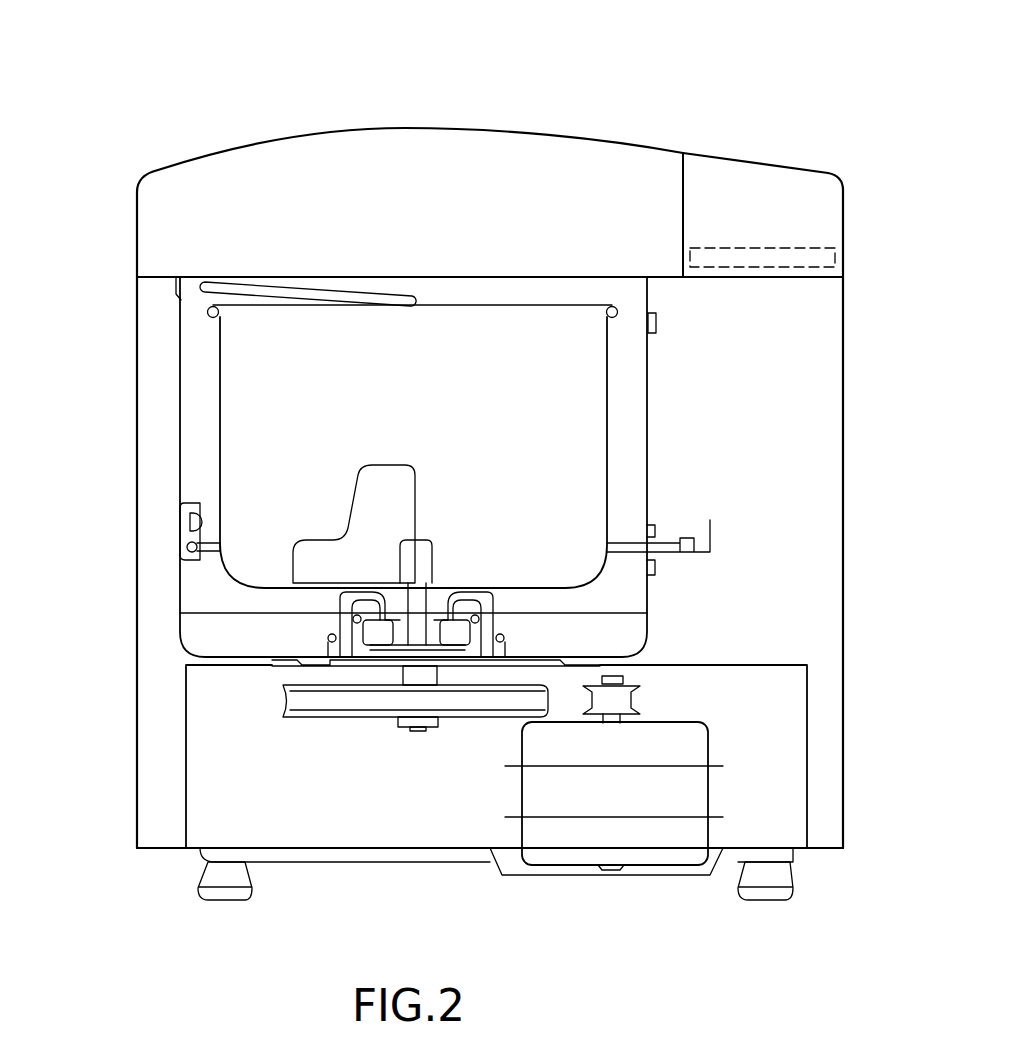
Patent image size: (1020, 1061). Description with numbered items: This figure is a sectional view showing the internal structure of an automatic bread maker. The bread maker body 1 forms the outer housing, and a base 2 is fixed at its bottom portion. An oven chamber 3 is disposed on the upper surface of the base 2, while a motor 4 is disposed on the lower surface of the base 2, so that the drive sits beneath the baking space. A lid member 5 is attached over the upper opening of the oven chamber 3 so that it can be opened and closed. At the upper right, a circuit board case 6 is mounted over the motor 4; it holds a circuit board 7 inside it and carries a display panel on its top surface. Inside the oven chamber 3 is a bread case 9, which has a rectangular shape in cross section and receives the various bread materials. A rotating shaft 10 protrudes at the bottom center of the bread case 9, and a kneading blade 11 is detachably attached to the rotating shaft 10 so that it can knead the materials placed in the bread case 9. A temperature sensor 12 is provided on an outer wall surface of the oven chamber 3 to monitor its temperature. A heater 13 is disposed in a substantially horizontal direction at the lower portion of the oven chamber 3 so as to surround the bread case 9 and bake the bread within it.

The bread maker body 1 is at (137, 355).
The base 2 is at (808, 704).
The oven chamber 3 is at (648, 462).
The motor 4 is at (624, 832).
The lid member 5 is at (408, 128).
The circuit board case 6 is at (747, 178).
The circuit board 7 is at (785, 252).
The bread case 9 is at (220, 425).
The rotating shaft 10 is at (420, 615).
The kneading blade 11 is at (336, 548).
The temperature sensor 12 is at (656, 323).
The heater 13 is at (190, 547).